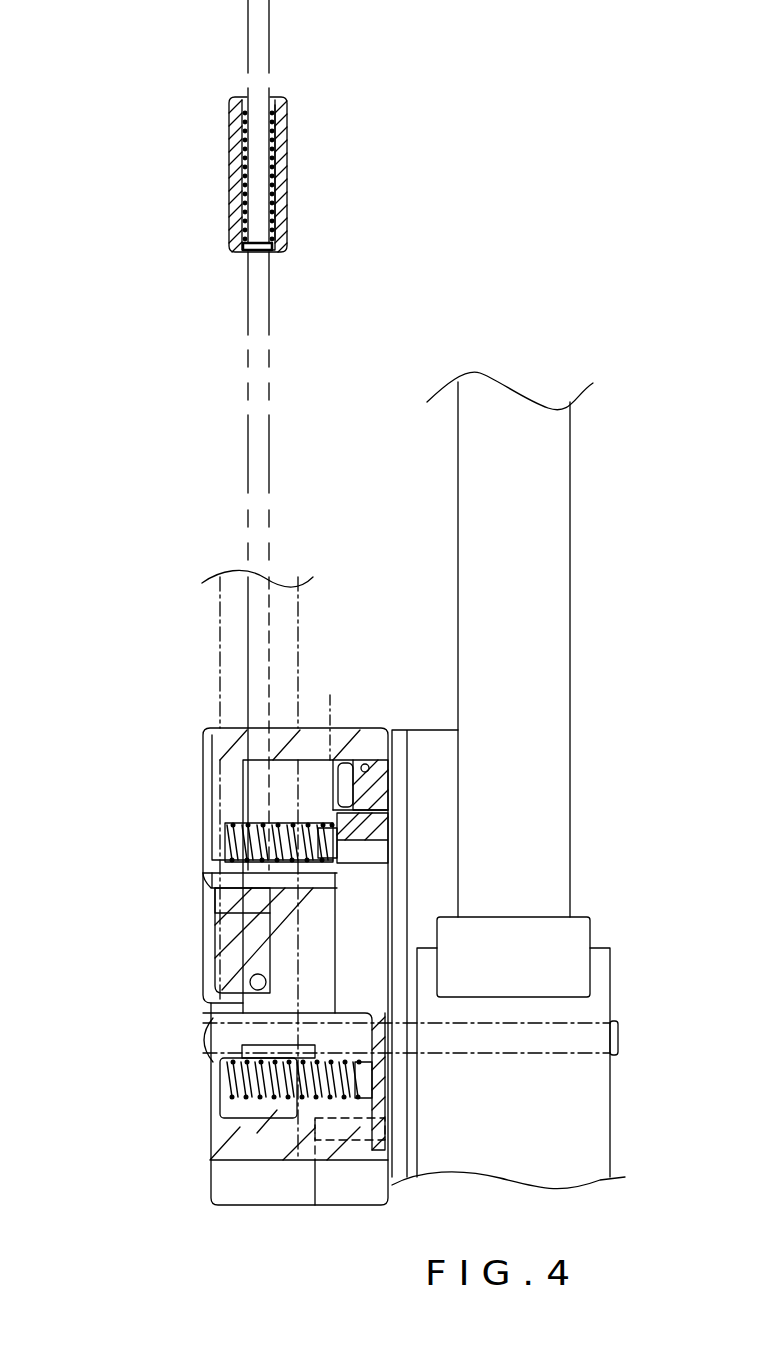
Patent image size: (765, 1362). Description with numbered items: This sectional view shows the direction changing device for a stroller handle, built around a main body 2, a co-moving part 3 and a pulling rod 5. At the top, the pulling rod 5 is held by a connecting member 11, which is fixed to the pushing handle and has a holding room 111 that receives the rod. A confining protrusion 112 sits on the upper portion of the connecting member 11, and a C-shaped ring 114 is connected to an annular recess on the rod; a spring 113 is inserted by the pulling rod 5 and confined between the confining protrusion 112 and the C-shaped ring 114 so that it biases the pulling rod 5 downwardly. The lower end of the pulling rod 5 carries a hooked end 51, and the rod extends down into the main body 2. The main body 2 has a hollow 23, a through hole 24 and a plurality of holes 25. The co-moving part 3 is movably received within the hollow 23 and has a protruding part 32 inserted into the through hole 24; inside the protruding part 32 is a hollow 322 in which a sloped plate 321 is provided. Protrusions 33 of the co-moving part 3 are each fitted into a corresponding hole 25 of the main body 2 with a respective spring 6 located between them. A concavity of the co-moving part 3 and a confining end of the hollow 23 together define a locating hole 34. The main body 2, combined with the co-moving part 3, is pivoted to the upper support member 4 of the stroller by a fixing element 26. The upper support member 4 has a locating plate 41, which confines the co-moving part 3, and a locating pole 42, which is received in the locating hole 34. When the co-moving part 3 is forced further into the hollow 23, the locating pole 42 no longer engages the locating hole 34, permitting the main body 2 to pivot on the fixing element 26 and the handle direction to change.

The main body 2 is at (287, 1188).
The co-moving part 3 is at (380, 920).
The upper support member 4 is at (550, 567).
The pulling rod 5 is at (248, 367).
The spring 6 is at (253, 820).
The connecting member 11 is at (232, 167).
The hollow 23 is at (272, 1133).
The through hole 24 is at (233, 873).
The holes 25 is at (223, 837).
The fixing element 26 is at (553, 1042).
The protruding part 32 is at (210, 917).
The protrusions 33 is at (323, 843).
The locating hole 34 is at (370, 767).
The locating plate 41 is at (400, 757).
The locating pole 42 is at (330, 695).
The hooked end 51 is at (253, 982).
The holding room 111 is at (277, 173).
The confining protrusion 112 is at (272, 100).
The spring 113 is at (278, 200).
The C-shaped ring 114 is at (257, 250).
The sloped plate 321 is at (233, 963).
The hollow 322 is at (212, 1043).